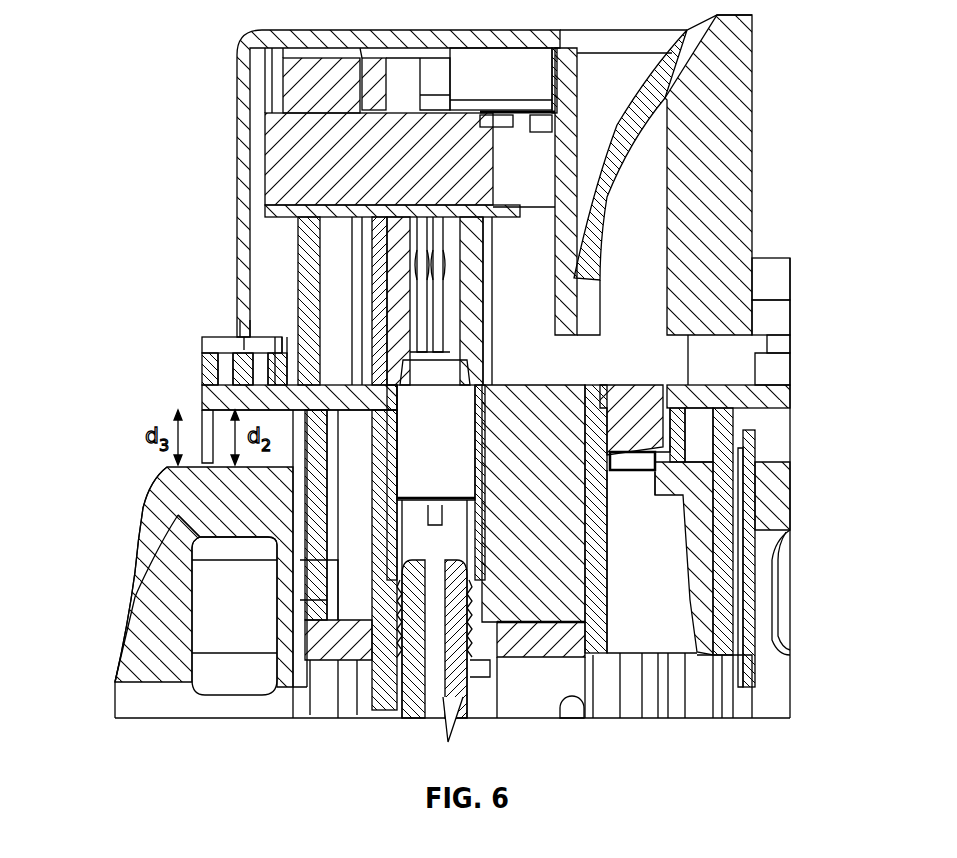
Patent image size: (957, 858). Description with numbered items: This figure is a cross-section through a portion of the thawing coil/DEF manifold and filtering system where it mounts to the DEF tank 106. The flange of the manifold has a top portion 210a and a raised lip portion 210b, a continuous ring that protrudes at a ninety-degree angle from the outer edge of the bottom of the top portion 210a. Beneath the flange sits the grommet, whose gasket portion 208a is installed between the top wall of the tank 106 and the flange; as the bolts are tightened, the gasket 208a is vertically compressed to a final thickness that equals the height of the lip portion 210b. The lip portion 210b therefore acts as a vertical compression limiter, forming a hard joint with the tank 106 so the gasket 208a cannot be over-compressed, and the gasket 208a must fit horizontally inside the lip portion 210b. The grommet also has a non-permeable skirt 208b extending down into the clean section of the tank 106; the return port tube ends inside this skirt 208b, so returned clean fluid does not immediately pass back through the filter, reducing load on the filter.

The top portion of flange 210a is at (225, 390).
The raised lip portion 210b is at (207, 420).
The gasket portion of grommet 208a is at (180, 517).
The skirt of grommet 208b is at (297, 603).
The DEF tank 106 is at (142, 510).